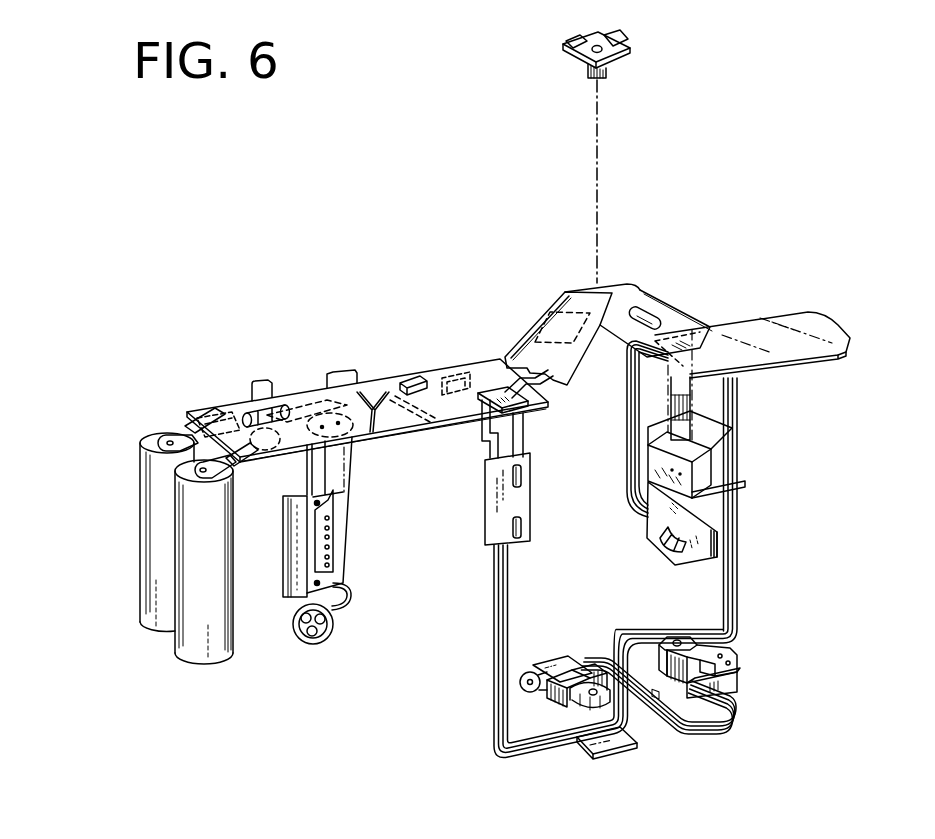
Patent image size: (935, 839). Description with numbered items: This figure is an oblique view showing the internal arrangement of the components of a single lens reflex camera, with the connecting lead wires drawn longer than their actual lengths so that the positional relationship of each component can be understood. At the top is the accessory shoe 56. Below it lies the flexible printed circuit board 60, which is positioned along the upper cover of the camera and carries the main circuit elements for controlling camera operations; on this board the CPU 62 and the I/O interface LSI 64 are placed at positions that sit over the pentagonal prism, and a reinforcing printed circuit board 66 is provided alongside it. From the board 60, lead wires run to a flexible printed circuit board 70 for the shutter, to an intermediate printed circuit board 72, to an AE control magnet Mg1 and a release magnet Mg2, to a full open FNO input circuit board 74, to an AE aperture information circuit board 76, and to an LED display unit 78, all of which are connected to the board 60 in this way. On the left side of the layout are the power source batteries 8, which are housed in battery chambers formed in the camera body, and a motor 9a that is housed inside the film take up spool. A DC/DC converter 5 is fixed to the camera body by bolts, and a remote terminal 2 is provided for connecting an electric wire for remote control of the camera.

The accessory shoe 56 is at (623, 36).
The flexible printed circuit board 60 is at (550, 300).
The CPU 62 is at (540, 332).
The I/O interface LSI 64 is at (653, 316).
The reinforcing printed circuit board 66 is at (850, 347).
The flexible printed circuit board for a shutter 70 is at (496, 508).
The intermediate printed circuit board 72 is at (622, 749).
The full open FNO input circuit board 74 is at (726, 537).
The AE aperture information circuit board 76 is at (720, 541).
The LED display unit 78 is at (712, 486).
The power source battery 8 is at (190, 598).
The motor 9a is at (323, 470).
The DC/DC converter 5 is at (305, 537).
The remote terminal 2 is at (312, 645).
The AE control magnet Mg1 is at (737, 681).
The release magnet Mg2 is at (592, 712).